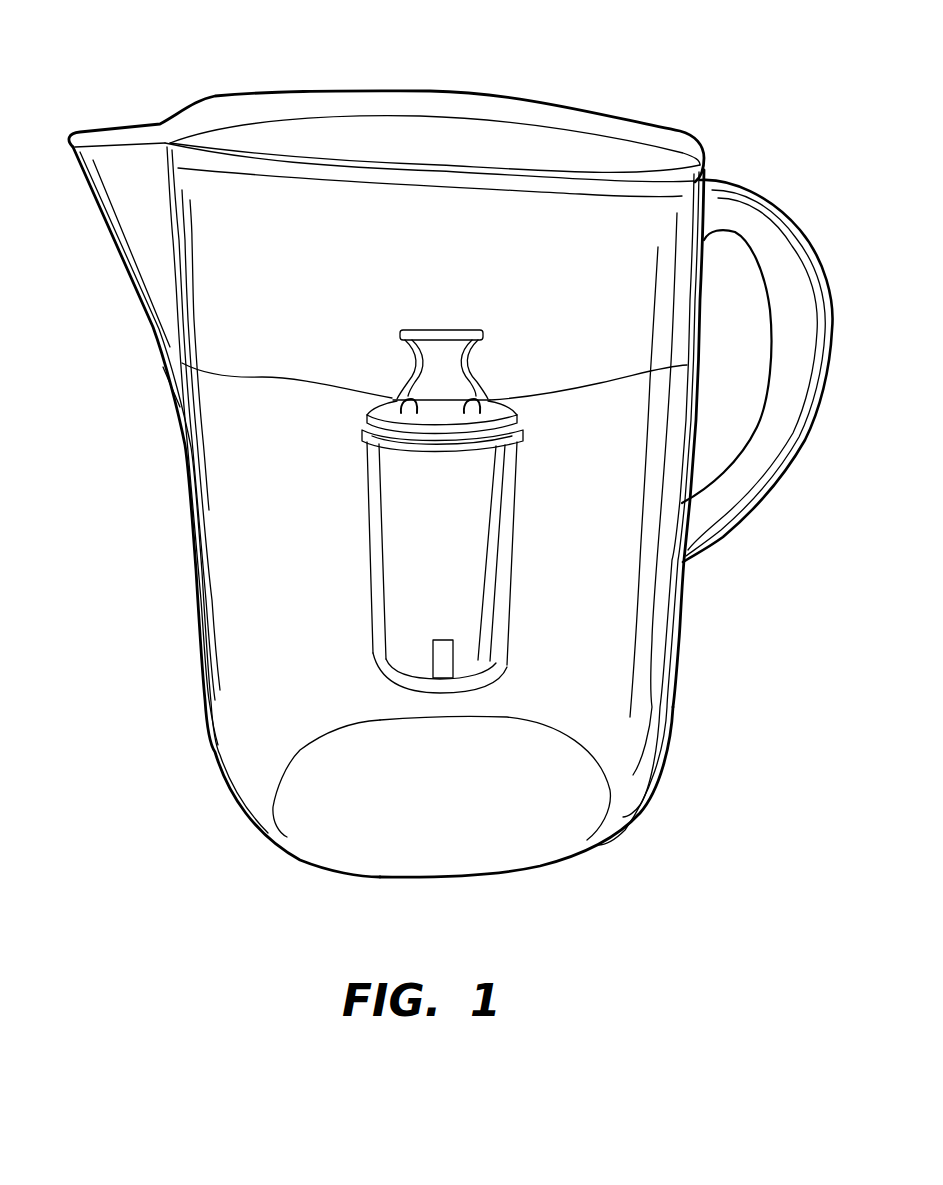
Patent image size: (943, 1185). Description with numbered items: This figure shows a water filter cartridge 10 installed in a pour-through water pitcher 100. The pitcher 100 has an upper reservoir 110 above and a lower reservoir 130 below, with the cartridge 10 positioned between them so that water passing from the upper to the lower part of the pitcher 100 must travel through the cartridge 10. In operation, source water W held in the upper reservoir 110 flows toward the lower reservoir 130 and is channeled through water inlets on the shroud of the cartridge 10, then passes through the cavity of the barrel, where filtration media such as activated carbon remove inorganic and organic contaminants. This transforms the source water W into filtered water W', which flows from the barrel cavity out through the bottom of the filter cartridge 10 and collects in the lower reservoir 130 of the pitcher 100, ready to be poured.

The water filter cartridge 10 is at (512, 630).
The pour-through water pitcher 100 is at (267, 672).
The upper reservoir 110 is at (430, 197).
The lower reservoir 130 is at (257, 468).
The source water W is at (502, 273).
The filtered water W' is at (529, 705).